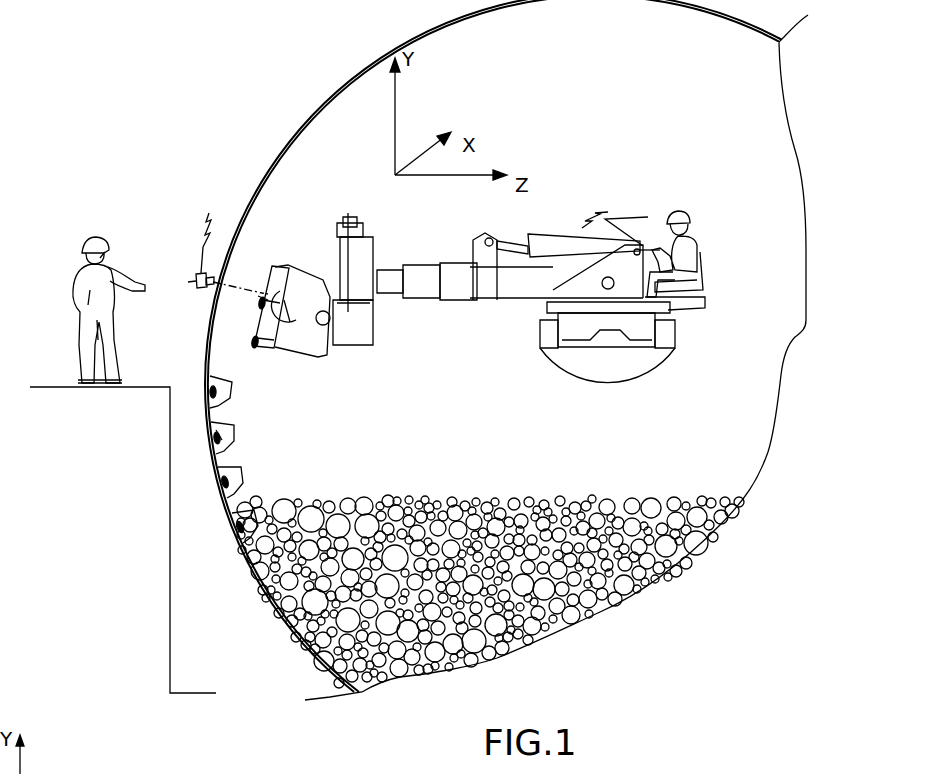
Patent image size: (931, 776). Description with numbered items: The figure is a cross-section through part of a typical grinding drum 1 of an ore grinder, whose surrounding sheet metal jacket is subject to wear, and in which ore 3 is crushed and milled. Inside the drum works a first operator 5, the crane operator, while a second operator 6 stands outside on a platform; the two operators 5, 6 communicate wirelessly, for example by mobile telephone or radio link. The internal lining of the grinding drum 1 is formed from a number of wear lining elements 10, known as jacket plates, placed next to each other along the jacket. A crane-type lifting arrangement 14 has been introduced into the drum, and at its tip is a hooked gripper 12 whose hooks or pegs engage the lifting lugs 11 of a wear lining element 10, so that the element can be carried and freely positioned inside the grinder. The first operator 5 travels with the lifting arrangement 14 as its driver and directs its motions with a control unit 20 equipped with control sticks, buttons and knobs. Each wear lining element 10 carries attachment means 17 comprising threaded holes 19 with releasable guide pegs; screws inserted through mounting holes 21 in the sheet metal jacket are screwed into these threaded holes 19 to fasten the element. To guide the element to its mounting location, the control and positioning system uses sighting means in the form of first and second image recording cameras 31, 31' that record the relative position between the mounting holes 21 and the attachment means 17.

The grinding drum 1 is at (276, 108).
The ore 3 is at (580, 588).
The first operator 5 is at (690, 236).
The second operator 6 is at (86, 275).
The wear lining element 10 is at (292, 283).
The lifting lugs 11 is at (284, 283).
The hooked gripper 12 is at (286, 336).
The lifting arrangement 14 is at (566, 200).
The attachment means 17 is at (216, 434).
The threaded holes 19 is at (262, 292).
The control unit 20 is at (652, 245).
The mounting holes 21 is at (218, 283).
The first image recording camera 31 is at (199, 304).
The second image recording camera 31' is at (265, 293).